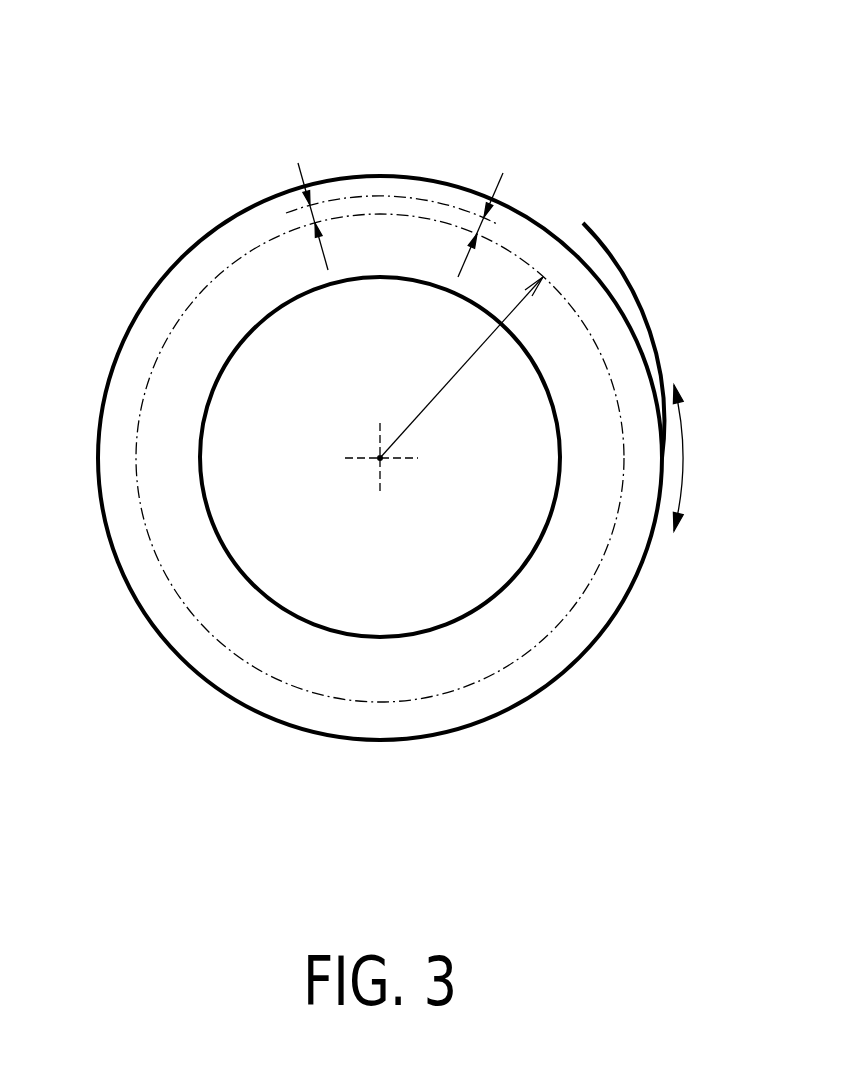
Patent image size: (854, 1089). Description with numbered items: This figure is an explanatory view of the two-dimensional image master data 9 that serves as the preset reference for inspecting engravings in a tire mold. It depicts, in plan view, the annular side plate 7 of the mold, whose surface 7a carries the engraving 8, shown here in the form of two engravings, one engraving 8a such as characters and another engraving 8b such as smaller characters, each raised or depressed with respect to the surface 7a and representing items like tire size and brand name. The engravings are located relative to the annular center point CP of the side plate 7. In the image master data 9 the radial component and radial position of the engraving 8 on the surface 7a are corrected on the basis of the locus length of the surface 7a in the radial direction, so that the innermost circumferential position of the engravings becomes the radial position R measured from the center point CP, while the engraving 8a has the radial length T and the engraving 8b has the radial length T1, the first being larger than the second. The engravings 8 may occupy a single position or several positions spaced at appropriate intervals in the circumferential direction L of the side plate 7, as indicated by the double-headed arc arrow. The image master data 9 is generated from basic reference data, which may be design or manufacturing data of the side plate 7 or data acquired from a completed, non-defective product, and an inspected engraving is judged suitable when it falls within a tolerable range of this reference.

The side plate 7 is at (157, 295).
The surface 7a is at (203, 388).
The engraving 8 is at (520, 97).
The engraving 8a is at (368, 193).
The engraving 8b is at (462, 207).
The image master data 9 is at (583, 223).
The radial length T is at (324, 216).
The radial length T1 is at (484, 232).
The radial position R is at (461, 367).
The center point CP is at (378, 460).
The circumferential direction L is at (690, 458).